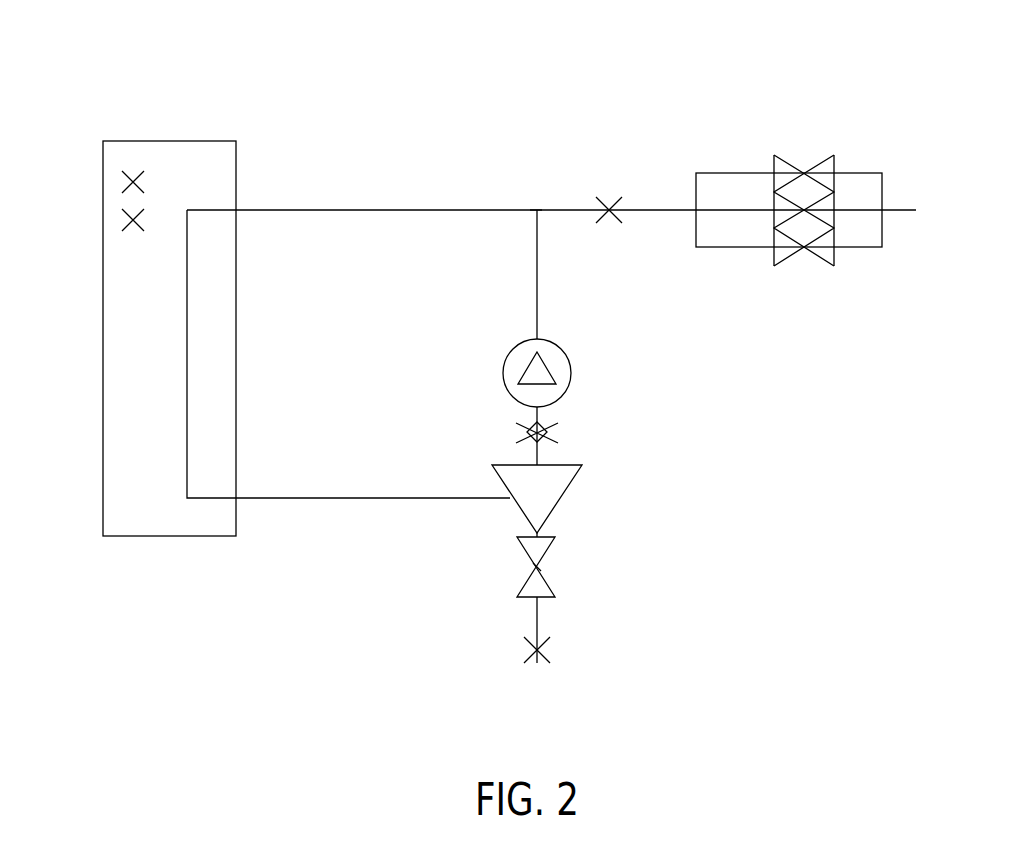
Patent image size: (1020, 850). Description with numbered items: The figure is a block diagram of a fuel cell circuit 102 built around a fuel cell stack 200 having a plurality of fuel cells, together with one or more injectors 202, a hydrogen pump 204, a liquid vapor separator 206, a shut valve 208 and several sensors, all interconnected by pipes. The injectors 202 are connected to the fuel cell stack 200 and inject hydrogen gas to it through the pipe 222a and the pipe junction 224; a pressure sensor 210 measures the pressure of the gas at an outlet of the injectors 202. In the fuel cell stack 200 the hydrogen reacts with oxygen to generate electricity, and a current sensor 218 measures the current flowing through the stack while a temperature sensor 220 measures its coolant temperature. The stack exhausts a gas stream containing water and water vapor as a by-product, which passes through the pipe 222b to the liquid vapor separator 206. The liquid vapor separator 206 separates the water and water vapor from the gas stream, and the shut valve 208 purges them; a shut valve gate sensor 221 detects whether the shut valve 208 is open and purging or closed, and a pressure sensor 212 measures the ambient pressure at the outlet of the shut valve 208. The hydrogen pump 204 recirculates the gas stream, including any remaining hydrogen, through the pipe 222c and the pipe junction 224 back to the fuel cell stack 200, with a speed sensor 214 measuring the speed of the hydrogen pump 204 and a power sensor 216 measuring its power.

The fuel cell circuit 102 is at (448, 85).
The fuel cell stack 200 is at (102, 331).
The temperature sensor 220 is at (115, 153).
The current sensor 218 is at (125, 215).
The pipe 222a is at (553, 210).
The pipe 222b is at (332, 500).
The pipe 222c is at (538, 272).
The pipe junction 224 is at (536, 202).
The pressure sensor 210 is at (603, 205).
The injectors 202 is at (838, 256).
The hydrogen pump 204 is at (571, 367).
The speed sensor 214 is at (517, 435).
The power sensor 216 is at (555, 427).
The liquid vapor separator 206 is at (570, 483).
The shut valve 208 is at (555, 583).
The shut valve gate sensor 221 is at (528, 565).
The pressure sensor 212 is at (550, 657).